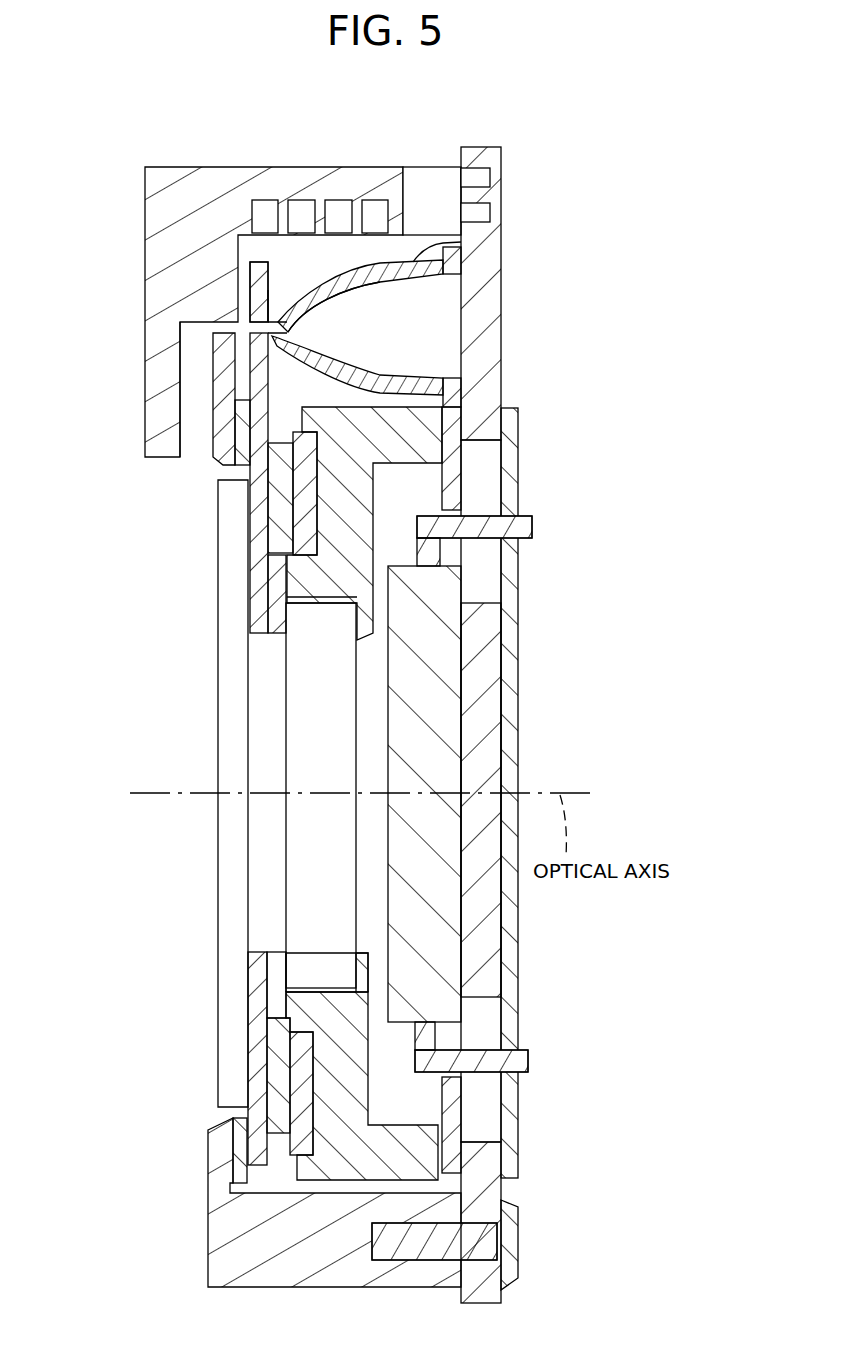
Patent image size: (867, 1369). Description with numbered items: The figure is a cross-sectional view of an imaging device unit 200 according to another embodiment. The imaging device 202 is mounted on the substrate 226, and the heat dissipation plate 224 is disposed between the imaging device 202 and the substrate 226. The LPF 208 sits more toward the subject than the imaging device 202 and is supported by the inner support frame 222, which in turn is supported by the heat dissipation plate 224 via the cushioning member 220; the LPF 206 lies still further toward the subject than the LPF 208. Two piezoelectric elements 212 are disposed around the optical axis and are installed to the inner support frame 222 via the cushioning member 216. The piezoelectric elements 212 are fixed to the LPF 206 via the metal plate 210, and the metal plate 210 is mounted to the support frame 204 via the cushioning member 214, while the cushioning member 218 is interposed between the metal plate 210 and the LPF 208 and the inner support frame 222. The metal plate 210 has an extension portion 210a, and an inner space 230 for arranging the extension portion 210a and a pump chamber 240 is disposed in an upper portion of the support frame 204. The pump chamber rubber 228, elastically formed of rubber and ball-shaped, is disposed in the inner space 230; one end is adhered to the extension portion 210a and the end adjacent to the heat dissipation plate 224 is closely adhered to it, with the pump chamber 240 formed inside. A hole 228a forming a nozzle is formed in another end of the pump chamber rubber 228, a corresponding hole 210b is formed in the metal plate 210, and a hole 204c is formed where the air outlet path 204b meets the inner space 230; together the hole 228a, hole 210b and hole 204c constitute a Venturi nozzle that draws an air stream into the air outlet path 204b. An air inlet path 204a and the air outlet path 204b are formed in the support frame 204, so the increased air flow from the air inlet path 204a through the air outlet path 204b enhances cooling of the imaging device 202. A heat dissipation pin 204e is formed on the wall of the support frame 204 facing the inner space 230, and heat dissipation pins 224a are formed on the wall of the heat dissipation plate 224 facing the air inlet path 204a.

The imaging device unit 200 is at (455, 1204).
The imaging device 202 is at (432, 762).
The support frame 204 is at (216, 178).
The air inlet path 204a is at (440, 183).
The air outlet path 204b is at (195, 387).
The hole 204c is at (246, 325).
The heat dissipation pin 204e is at (283, 210).
The LPF 206 is at (222, 926).
The LPF 208 is at (305, 713).
The metal plate 210 is at (258, 511).
The extension portion 210a is at (250, 272).
The hole 210b is at (262, 300).
The piezoelectric element 212 is at (277, 490).
The cushioning member 214 is at (228, 442).
The cushioning member 216 is at (303, 538).
The cushioning member 218 is at (275, 617).
The cushioning member 220 is at (455, 468).
The inner support frame 222 is at (412, 590).
The heat dissipation plate 224 is at (478, 917).
The heat dissipation pin 224a is at (470, 190).
The substrate 226 is at (508, 956).
The pump chamber rubber 228 is at (465, 272).
The hole 228a is at (318, 296).
The inner space 230 is at (336, 248).
The pump chamber 240 is at (360, 296).